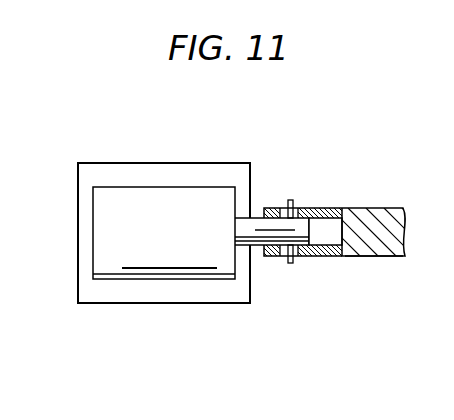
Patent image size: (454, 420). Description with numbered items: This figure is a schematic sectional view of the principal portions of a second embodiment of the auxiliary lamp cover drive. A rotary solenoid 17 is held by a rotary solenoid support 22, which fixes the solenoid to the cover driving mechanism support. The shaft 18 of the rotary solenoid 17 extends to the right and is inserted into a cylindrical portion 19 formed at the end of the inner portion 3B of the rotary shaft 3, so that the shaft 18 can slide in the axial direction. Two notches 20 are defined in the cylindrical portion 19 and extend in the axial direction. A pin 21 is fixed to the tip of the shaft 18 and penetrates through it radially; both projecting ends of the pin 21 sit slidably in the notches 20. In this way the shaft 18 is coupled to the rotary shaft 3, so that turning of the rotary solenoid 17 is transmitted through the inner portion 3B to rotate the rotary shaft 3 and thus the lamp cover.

The rotary shaft 3 is at (378, 202).
The inner portion of the rotary shaft 3B is at (373, 247).
The rotary solenoid 17 is at (138, 199).
The shaft 18 is at (257, 226).
The cylindrical portion 19 is at (323, 212).
The notches 20 is at (298, 211).
The pin 21 is at (287, 259).
The rotary solenoid support 22 is at (138, 292).